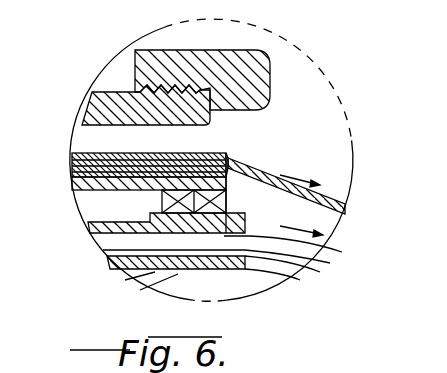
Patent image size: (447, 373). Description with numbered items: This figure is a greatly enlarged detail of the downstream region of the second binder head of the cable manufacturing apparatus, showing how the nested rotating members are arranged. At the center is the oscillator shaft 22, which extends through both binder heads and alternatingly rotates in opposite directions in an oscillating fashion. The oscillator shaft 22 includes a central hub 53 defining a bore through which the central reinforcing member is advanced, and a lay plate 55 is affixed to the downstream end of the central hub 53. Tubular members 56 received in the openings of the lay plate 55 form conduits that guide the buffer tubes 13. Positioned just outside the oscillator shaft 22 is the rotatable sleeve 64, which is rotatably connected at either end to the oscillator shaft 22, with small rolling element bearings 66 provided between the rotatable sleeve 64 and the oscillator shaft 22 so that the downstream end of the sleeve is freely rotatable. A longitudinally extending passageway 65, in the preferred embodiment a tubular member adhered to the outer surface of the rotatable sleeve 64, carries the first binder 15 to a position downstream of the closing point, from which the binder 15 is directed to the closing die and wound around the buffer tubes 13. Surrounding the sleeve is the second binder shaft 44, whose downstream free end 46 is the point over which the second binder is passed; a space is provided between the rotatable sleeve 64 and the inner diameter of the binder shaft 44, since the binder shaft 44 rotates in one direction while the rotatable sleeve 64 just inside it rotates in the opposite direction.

The buffer tube 13 is at (330, 249).
The first binder 15 is at (348, 196).
The oscillator shaft 22 is at (165, 272).
The second binder shaft 44 is at (122, 100).
The downstream free end 46 is at (267, 64).
The central hub 53 is at (172, 280).
The lay plate 55 is at (226, 233).
The tubular member 56 is at (110, 248).
The rotatable sleeve 64 is at (97, 197).
The longitudinally extending passageway 65 is at (73, 152).
The rolling element bearing 66 is at (215, 174).